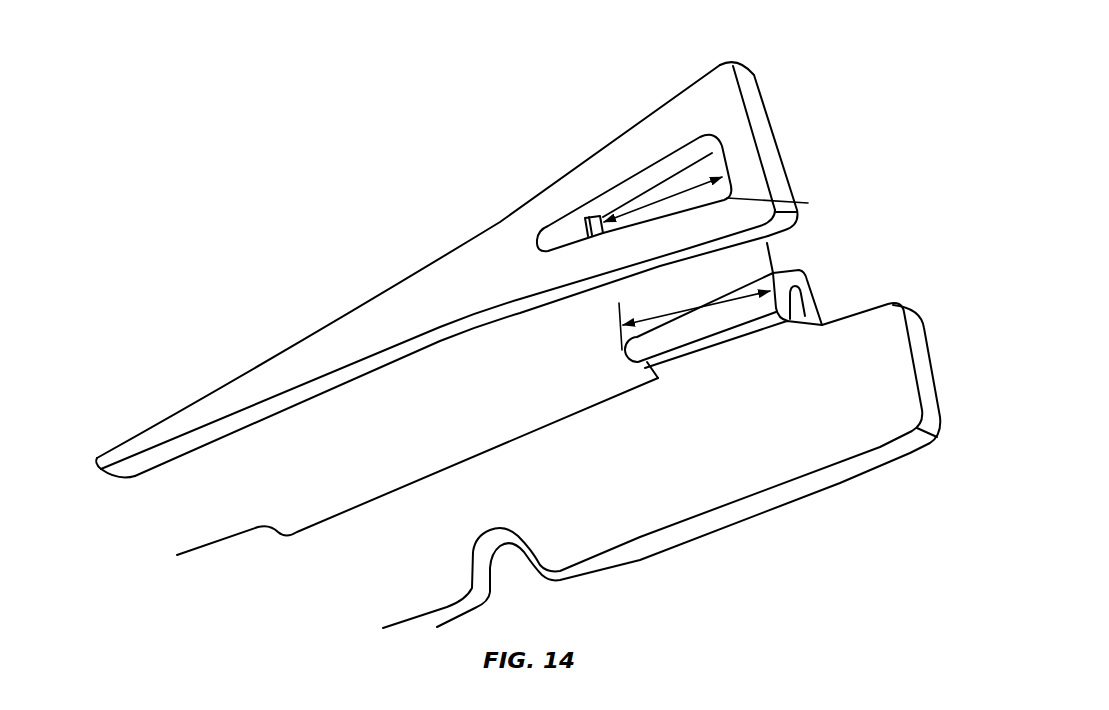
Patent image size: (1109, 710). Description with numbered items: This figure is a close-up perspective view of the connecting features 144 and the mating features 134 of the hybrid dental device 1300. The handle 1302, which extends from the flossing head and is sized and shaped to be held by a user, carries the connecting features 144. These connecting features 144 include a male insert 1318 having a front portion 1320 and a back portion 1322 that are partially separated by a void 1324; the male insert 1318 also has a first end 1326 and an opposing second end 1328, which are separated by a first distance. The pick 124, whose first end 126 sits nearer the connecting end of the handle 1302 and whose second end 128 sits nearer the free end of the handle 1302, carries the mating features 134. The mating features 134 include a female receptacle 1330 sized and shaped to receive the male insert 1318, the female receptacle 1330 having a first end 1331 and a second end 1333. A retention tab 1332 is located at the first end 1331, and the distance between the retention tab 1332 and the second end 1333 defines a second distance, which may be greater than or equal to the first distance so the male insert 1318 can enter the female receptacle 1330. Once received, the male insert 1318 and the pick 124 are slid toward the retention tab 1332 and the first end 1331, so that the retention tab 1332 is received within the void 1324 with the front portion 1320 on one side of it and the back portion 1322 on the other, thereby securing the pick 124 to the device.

The hybrid dental device 1300 is at (822, 70).
The second end of the pick 128 is at (790, 170).
The pick 124 is at (513, 208).
The mating features 134 is at (700, 101).
The first end of the pick 126 is at (96, 462).
The first end of the female receptacle 1331 is at (537, 245).
The retention tab 1332 is at (570, 232).
The female receptacle 1330 is at (652, 212).
The second end of the female receptacle 1333 is at (723, 177).
The handle 1302 is at (420, 478).
The front portion 1320 is at (655, 340).
The first end of the male insert 1326 is at (623, 360).
The back portion 1322 is at (813, 308).
The male insert 1318 is at (786, 262).
The second end of the male insert 1328 is at (807, 279).
The void 1324 is at (800, 316).
The connecting features 144 is at (828, 259).